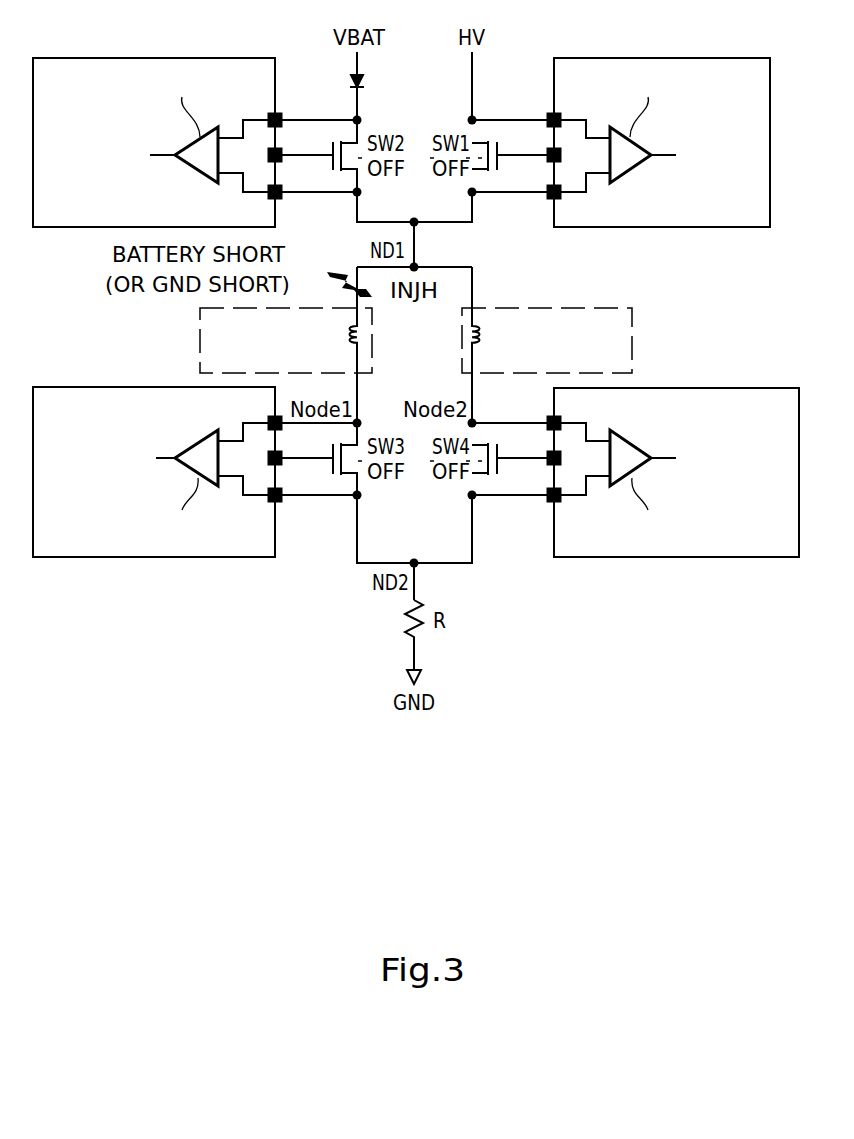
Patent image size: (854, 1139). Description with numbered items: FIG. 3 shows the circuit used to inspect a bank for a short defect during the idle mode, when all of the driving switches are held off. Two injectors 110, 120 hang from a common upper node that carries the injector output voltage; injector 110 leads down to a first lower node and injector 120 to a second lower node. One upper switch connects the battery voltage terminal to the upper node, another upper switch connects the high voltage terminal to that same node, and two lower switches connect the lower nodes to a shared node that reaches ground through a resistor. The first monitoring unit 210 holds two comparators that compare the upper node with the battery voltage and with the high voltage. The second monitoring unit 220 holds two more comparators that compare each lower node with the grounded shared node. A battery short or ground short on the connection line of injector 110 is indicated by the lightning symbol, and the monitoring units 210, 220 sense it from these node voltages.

The injector 110 is at (200, 361).
The injector 120 is at (629, 308).
The first monitoring unit 210 is at (248, 58).
The second monitoring unit 220 is at (72, 387).